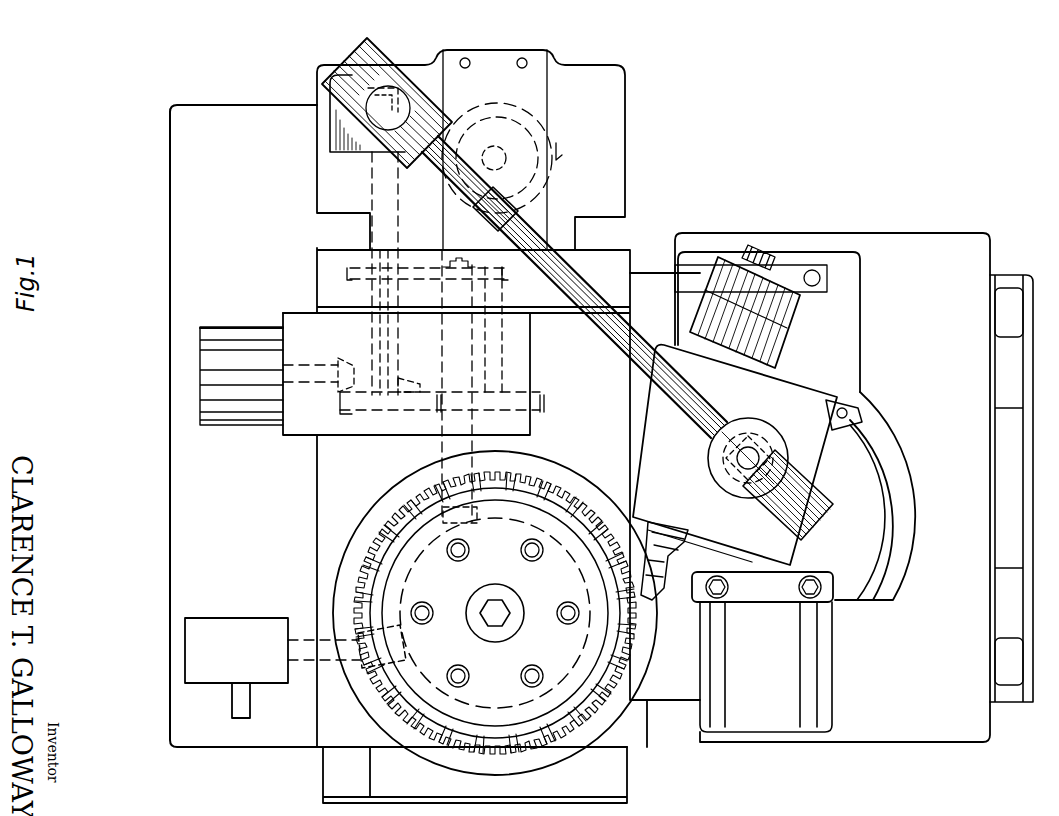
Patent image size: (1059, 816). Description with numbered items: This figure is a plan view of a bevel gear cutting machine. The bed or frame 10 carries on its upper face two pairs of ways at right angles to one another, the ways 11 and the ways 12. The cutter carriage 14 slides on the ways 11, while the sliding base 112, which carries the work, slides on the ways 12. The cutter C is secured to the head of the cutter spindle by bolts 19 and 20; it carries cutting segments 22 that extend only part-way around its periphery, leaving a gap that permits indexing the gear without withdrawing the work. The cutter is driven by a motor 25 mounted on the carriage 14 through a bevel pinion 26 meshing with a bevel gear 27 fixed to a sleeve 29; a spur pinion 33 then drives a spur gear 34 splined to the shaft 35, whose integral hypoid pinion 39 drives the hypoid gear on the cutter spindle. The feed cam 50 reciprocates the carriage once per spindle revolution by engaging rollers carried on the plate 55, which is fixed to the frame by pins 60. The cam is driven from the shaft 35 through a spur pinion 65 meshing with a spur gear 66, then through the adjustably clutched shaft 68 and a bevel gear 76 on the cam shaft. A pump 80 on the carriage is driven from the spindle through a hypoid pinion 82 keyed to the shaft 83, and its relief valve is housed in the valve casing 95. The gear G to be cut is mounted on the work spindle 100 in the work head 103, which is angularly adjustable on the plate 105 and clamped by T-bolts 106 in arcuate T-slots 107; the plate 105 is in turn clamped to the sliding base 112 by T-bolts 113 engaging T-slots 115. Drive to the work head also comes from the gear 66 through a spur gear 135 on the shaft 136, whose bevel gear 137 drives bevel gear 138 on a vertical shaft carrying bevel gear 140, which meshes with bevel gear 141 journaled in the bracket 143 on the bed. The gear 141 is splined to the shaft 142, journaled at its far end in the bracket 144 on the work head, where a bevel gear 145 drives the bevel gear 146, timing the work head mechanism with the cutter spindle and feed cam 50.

The bed or frame 10 is at (183, 516).
The ways 11 is at (362, 778).
The ways 12 is at (1010, 400).
The cutter carriage 14 is at (318, 498).
The bolts 19 is at (522, 676).
The bolts 20 is at (506, 606).
The cutting segments 22 is at (410, 490).
The motor 25 is at (242, 330).
The bevel pinion 26 is at (360, 346).
The bevel gear 27 is at (402, 390).
The sleeve 29 is at (397, 342).
The spur pinion 33 is at (348, 272).
The spur gear 34 is at (428, 268).
The shaft 35 is at (445, 350).
The hypoid pinion 39 is at (475, 522).
The feed cam 50 is at (540, 116).
The plate 55 is at (495, 58).
The pins 60 is at (525, 60).
The spur pinion 65 is at (437, 408).
The spur gear 66 is at (545, 408).
The shaft 68 is at (512, 362).
The bevel gear 76 is at (560, 158).
The pump 80 is at (255, 605).
The hypoid pinion 82 is at (385, 615).
The shaft 83 is at (332, 668).
The valve casing 95 is at (232, 705).
The work spindle 100 is at (762, 365).
The work head 103 is at (790, 548).
The plate 105 is at (900, 532).
The T-bolts 106 is at (860, 412).
The arcuate T-slots 107 is at (885, 478).
The sliding base 112 is at (900, 740).
The T-bolts 113 is at (796, 587).
The T-slots 115 is at (800, 680).
The spur gear 135 is at (350, 408).
The shaft 136 is at (395, 212).
The bevel gear 137 is at (425, 75).
The bevel gear 138 is at (352, 120).
The bevel gear 140 is at (310, 136).
The bevel gear 141 is at (415, 92).
The shaft 142 is at (614, 345).
The bracket 143 is at (365, 60).
The bracket 144 is at (780, 515).
The bevel gear 145 is at (750, 490).
The bevel gear 146 is at (727, 470).
The cutter C is at (495, 613).
The gear or pinion G is at (655, 598).